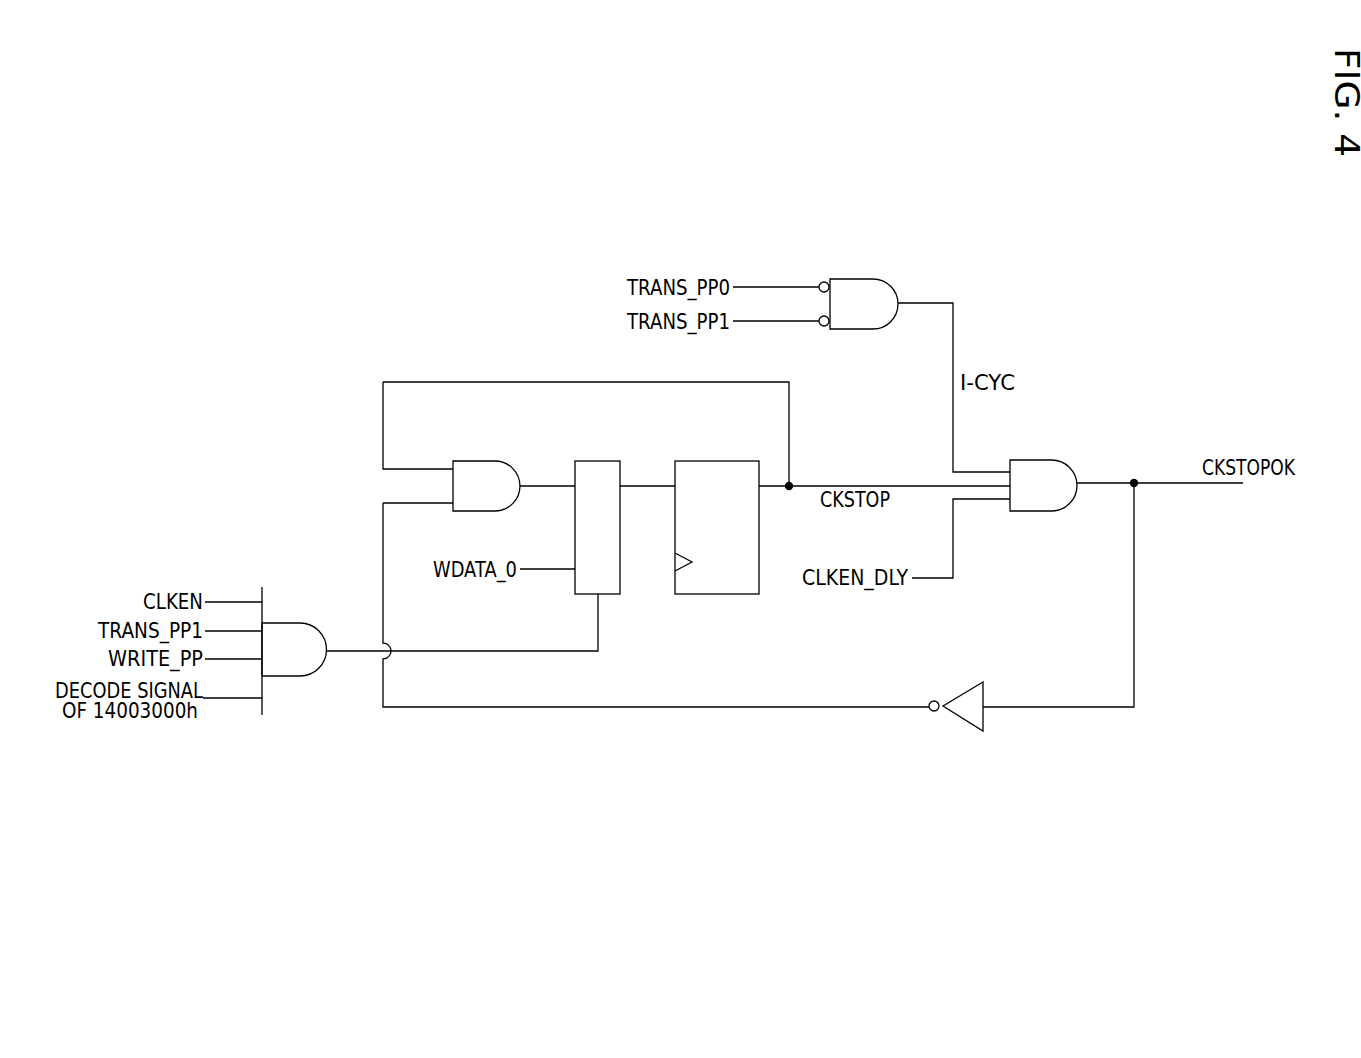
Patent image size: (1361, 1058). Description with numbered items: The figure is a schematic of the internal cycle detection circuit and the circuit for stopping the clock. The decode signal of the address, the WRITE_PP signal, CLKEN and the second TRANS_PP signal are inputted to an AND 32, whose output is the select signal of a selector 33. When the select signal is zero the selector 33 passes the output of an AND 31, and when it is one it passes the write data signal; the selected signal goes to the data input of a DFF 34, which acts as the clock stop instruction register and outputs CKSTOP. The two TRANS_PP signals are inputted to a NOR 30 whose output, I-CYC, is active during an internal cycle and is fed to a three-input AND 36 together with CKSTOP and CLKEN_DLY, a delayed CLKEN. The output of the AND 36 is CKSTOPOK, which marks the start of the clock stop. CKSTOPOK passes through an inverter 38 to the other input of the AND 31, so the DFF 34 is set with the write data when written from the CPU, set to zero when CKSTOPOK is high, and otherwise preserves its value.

The NOR 30 is at (870, 278).
The AND 31 is at (490, 460).
The AND 32 is at (302, 622).
The selector 33 is at (597, 460).
The DFF 34 is at (718, 460).
The 3-input AND 36 is at (1052, 460).
The inverter 38 is at (985, 690).